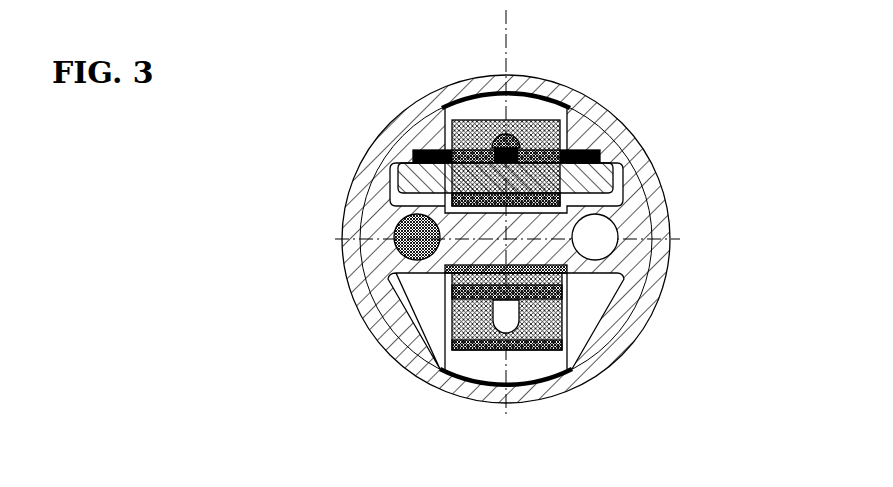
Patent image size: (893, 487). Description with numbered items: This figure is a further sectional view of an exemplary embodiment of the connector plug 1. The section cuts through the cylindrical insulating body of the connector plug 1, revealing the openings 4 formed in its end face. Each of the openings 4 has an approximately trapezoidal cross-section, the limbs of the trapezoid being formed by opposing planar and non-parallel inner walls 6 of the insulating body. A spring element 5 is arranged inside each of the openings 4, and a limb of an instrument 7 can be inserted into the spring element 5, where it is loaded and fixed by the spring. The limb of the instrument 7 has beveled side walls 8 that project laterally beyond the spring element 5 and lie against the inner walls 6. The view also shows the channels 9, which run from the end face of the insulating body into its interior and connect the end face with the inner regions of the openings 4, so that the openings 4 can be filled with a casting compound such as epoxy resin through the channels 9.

The connector plug 1 is at (685, 80).
The openings 4 is at (593, 308).
The spring element 5 is at (592, 149).
The inner walls 6 is at (605, 171).
The instrument 7 is at (413, 157).
The beveled side walls 8 is at (408, 168).
The channels 9 is at (617, 242).